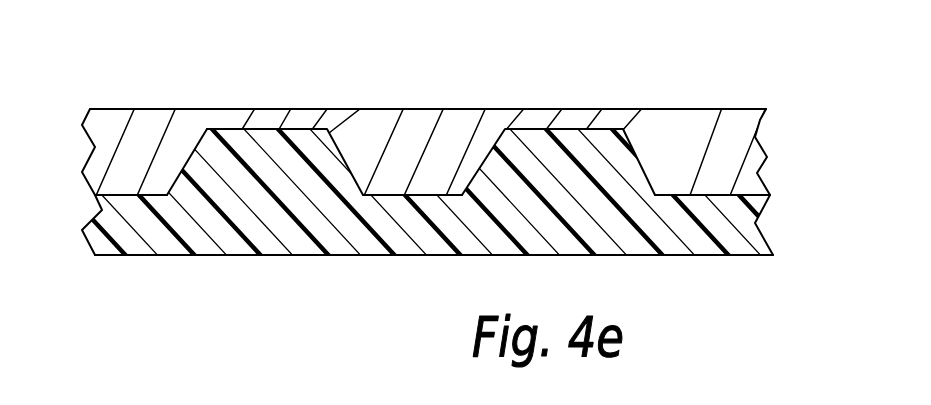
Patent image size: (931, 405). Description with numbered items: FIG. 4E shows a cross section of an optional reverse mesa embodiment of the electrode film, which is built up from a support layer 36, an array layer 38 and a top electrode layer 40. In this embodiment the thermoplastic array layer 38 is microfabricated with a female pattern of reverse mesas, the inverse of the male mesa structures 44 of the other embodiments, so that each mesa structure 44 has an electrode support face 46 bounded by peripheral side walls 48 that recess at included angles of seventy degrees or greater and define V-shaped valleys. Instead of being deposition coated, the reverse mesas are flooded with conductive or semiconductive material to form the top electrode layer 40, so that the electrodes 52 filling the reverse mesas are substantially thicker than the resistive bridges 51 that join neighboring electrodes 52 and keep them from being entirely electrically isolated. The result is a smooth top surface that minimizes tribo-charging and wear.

The support layer 36 is at (747, 246).
The array layer 38 is at (66, 162).
The top electrode layer 40 is at (742, 113).
The mesa structure 44 is at (643, 170).
The electrode support face 46 is at (112, 117).
The peripheral side walls 48 is at (180, 158).
The resistive bridges 51 is at (628, 90).
The electrodes 52 is at (423, 115).